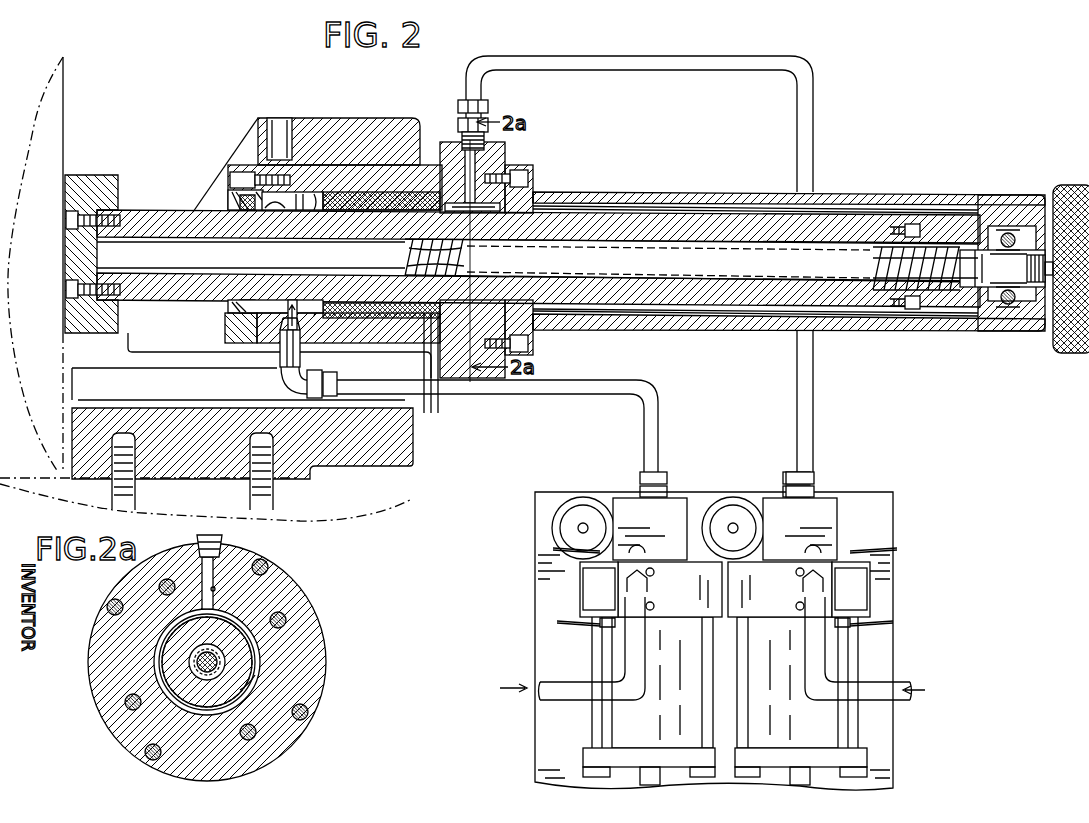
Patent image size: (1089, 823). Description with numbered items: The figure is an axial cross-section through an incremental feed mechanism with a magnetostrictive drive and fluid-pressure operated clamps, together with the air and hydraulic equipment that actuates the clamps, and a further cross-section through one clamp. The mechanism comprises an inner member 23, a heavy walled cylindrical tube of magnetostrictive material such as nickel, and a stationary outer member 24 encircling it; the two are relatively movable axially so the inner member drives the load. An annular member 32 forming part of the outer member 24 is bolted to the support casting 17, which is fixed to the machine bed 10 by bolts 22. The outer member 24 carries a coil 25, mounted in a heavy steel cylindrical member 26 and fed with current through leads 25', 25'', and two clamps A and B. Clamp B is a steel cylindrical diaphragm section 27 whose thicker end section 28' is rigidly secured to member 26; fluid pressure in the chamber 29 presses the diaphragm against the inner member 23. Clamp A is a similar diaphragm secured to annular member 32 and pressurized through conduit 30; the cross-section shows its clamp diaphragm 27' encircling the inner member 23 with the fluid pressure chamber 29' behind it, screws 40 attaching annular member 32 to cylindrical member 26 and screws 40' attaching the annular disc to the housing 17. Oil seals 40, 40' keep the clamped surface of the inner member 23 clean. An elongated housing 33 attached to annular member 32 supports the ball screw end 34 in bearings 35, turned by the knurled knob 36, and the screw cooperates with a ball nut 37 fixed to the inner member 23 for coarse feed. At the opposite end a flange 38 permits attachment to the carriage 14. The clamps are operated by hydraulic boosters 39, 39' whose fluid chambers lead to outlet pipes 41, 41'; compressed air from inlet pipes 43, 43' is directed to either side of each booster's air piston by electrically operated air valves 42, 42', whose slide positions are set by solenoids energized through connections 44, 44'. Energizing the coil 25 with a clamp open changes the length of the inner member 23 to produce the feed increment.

In FIG. 2, the machine bed 10 is at (352, 498).
In FIG. 2, the carriage 14 is at (63, 104).
In FIG. 2, the support casting 17 is at (370, 118).
In FIG. 2, the bolts 22 is at (133, 497).
In FIG. 2, the inner member 23 is at (160, 212).
In FIG. 2a, the inner member 23 is at (245, 668).
In FIG. 2, the outer member 24 is at (553, 149).
In FIG. 2, the coil 25 is at (388, 218).
In FIG. 2, the lead 25' is at (444, 381).
In FIG. 2, the lead 25'' is at (465, 368).
In FIG. 2, the cylindrical member 26 is at (382, 168).
In FIG. 2, the diaphragm section 27 is at (264, 236).
In FIG. 2a, the clamp diaphragm 27' is at (261, 657).
In FIG. 2, the end section 28' is at (281, 255).
In FIG. 2, the chamber 29 is at (289, 232).
In FIG. 2a, the fluid pressure chamber 29' is at (253, 645).
In FIG. 2, the conduit 30 is at (477, 163).
In FIG. 2a, the conduit 30 is at (214, 589).
In FIG. 2, the annular member 32 is at (505, 151).
In FIG. 2a, the annular member 32 is at (288, 579).
In FIG. 2, the housing 33 is at (740, 192).
In FIG. 2, the ball screw end 34 is at (998, 270).
In FIG. 2a, the ball screw end 34 is at (217, 662).
In FIG. 2, the bearings 35 is at (993, 305).
In FIG. 2, the knurled knob 36 is at (1068, 188).
In FIG. 2, the ball nut 37 is at (935, 243).
In FIG. 2, the flange 38 is at (85, 175).
In FIG. 2, the hydraulic booster 39 is at (649, 628).
In FIG. 2, the hydraulic booster 39' is at (801, 628).
In FIG. 2, the oil seal 40 is at (257, 321).
In FIG. 2a, the oil seal 40 is at (192, 672).
In FIG. 2, the oil seal 40' is at (531, 327).
In FIG. 2a, the oil seal 40' is at (235, 667).
In FIG. 2, the outlet pipe 41 is at (469, 386).
In FIG. 2, the outlet pipe 41' is at (830, 401).
In FIG. 2, the air valve 42 is at (635, 557).
In FIG. 2, the air valve 42' is at (828, 557).
In FIG. 2, the inlet pipe 43 is at (572, 648).
In FIG. 2, the inlet pipe 43' is at (873, 648).
In FIG. 2, the connection 44 is at (701, 562).
In FIG. 2, the connection 44' is at (719, 634).
In FIG. 2, the clamp A is at (488, 204).
In FIG. 2a, the clamp A is at (258, 680).
In FIG. 2, the clamp B is at (229, 180).